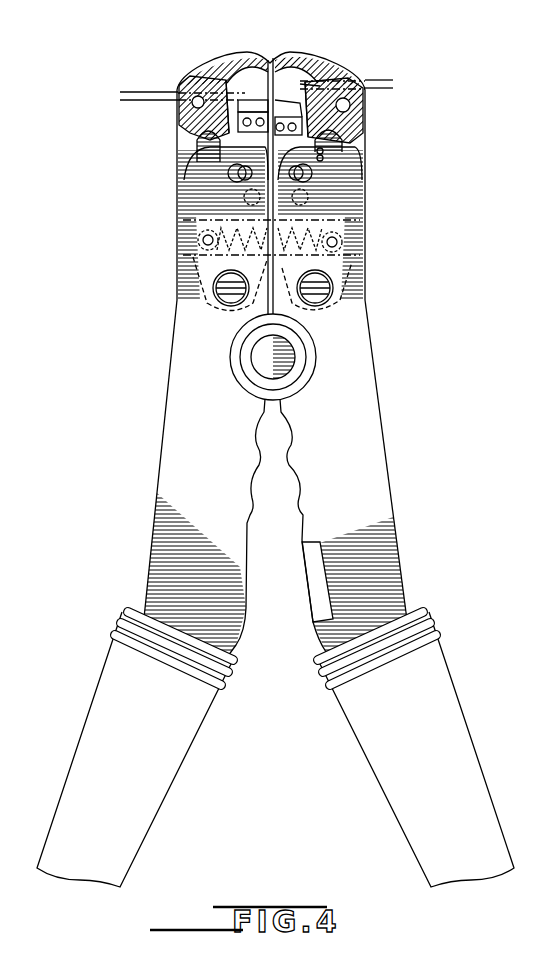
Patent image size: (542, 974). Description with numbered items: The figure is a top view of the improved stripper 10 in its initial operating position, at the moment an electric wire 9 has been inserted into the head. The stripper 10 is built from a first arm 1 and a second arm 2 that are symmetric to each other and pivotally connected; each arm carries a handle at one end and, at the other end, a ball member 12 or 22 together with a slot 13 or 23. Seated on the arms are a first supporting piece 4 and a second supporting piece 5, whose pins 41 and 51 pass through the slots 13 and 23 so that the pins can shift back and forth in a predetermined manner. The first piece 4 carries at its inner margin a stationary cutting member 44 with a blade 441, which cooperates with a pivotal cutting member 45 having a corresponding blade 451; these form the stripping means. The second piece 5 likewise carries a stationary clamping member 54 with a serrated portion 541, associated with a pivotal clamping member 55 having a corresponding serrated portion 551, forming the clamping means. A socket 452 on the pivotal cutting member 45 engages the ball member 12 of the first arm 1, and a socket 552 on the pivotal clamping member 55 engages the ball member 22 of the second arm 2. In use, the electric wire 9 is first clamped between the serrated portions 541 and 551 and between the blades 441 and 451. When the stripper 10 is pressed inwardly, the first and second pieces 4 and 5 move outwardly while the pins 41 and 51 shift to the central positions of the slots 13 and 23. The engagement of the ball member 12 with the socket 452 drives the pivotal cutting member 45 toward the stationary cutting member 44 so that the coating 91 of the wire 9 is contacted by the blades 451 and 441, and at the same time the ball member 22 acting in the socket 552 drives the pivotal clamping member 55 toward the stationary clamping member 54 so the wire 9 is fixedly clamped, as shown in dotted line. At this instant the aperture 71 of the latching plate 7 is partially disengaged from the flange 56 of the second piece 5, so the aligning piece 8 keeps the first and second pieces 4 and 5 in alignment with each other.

The stripper 10 is at (402, 417).
The first arm 1 is at (400, 557).
The second arm 2 is at (168, 377).
The first supporting piece 4 is at (340, 293).
The second supporting piece 5 is at (200, 287).
The latching plate 7 is at (343, 220).
The aligning piece 8 is at (300, 153).
The electric wire 9 is at (383, 80).
The coating 91 is at (287, 78).
The ball member 12 is at (340, 150).
The slot 13 is at (314, 186).
The ball member 22 is at (195, 132).
The slot 23 is at (243, 200).
The pin 41 is at (313, 177).
The stationary cutting member 44 is at (303, 118).
The blade 441 is at (300, 88).
The pivotal cutting member 45 is at (367, 107).
The blade 451 is at (282, 78).
The socket 452 is at (363, 135).
The pin 51 is at (233, 178).
The stationary clamping member 54 is at (183, 163).
The serrated portion 541 is at (233, 85).
The pivotal clamping member 55 is at (182, 83).
The serrated portion 551 is at (255, 75).
The socket 552 is at (183, 113).
The flange 56 is at (255, 218).
The aperture 71 is at (235, 245).